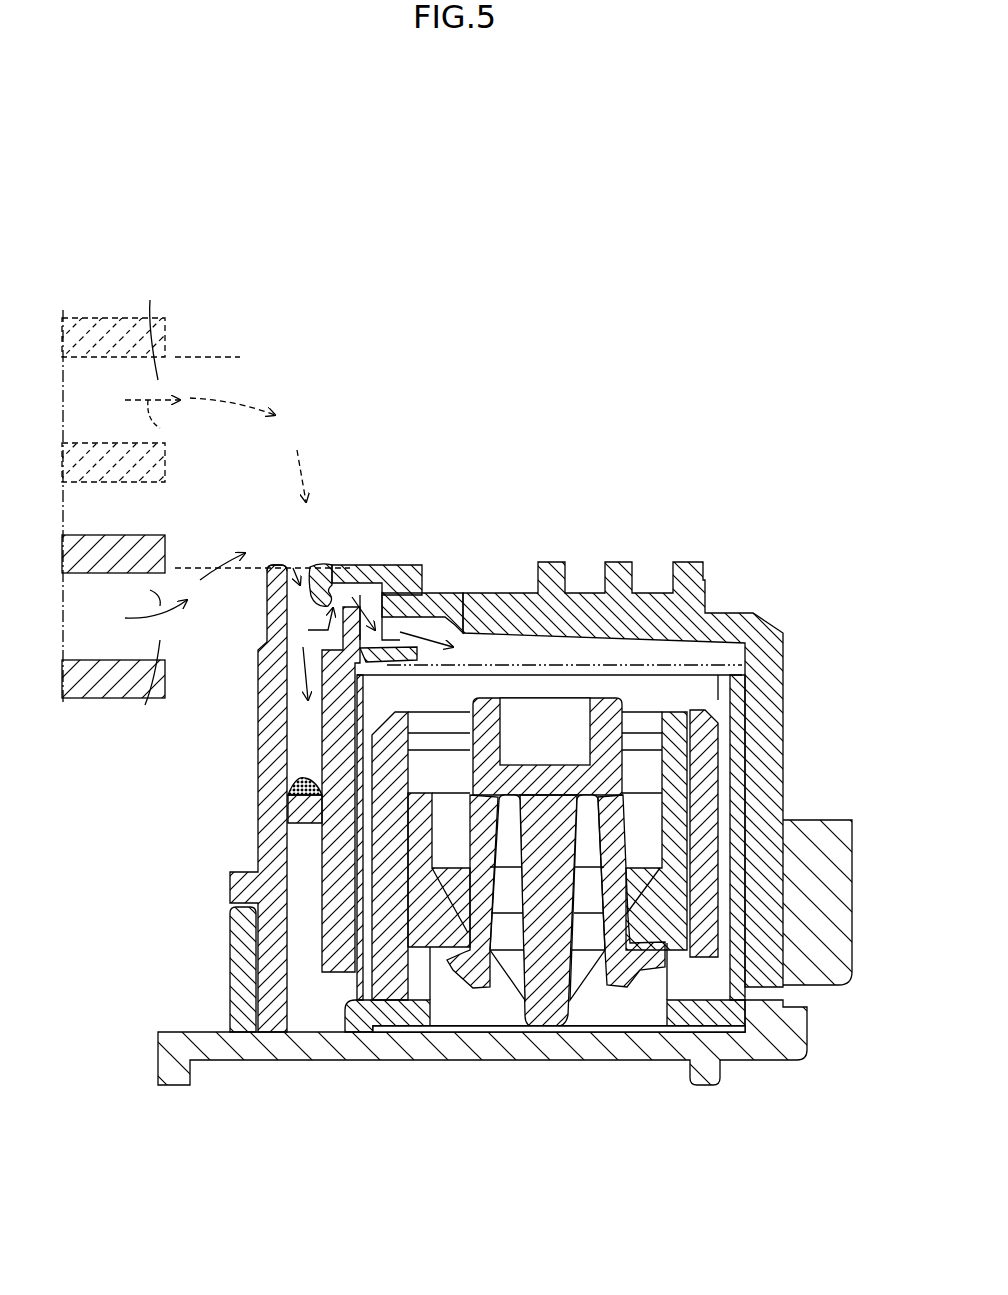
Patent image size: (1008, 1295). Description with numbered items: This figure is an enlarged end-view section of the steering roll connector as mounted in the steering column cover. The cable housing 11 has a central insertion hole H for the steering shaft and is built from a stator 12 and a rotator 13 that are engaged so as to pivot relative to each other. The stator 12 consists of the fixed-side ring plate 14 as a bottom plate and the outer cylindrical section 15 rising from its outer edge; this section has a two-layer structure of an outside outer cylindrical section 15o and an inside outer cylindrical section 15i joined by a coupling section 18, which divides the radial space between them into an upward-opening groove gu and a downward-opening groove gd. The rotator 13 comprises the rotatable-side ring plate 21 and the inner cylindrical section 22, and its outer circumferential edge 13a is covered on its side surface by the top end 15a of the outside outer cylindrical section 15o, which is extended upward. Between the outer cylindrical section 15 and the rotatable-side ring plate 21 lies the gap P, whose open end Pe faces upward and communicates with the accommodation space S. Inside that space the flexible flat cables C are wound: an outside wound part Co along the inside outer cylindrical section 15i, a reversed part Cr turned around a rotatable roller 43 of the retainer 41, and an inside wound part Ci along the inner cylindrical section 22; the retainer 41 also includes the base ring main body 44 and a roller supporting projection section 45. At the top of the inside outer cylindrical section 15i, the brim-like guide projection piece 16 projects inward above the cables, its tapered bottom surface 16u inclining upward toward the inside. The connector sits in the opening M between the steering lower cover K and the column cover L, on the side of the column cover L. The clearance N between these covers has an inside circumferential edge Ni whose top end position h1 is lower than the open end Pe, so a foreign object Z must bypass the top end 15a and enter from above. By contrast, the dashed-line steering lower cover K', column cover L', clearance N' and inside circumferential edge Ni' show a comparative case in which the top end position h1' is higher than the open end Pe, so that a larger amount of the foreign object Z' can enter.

The cable housing 11 is at (500, 497).
The stator 12 is at (247, 1064).
The rotator 13 is at (363, 567).
The outer circumferential edge 13a is at (320, 572).
The fixed-side ring plate 14 is at (315, 1061).
The outer cylindrical section 15 is at (142, 812).
The top end 15a is at (288, 564).
The inside outer cylindrical section 15i is at (325, 860).
The outside outer cylindrical section 15o is at (260, 820).
The guide projection piece 16 is at (412, 600).
The bottom surface 16u is at (387, 665).
The coupling section 18 is at (298, 777).
The rotatable-side ring plate 21 is at (510, 593).
The inner cylindrical section 22 is at (783, 668).
The retainer 41 is at (622, 1015).
The rotatable roller 43 is at (720, 765).
The base ring main body 44 is at (417, 988).
The roller supporting projection section 45 is at (383, 983).
The steering lower cover K is at (113, 535).
The steering lower cover (comparative position) K' is at (113, 311).
The column cover L is at (113, 704).
The column cover (comparative position) L' is at (131, 473).
The clearance N is at (93, 616).
The clearance (comparative) N' is at (177, 402).
The inside circumferential edge Ni is at (143, 691).
The inside circumferential edge (comparative) Ni' is at (149, 328).
The opening M is at (246, 628).
The top end position h1 is at (262, 551).
The top end position (comparative) h1' is at (220, 333).
The foreign object Z is at (301, 677).
The foreign object (comparative) Z' is at (167, 422).
The open end Pe is at (300, 565).
The gap P is at (370, 592).
The accommodation space S is at (557, 648).
The reversed part Cr is at (630, 685).
The flexible flat cable C is at (675, 655).
The inside wound part Ci is at (745, 727).
The insertion hole H is at (836, 807).
The groove (upward) gu is at (305, 715).
The groove (downward) gd is at (312, 905).
The outside wound part Co is at (362, 760).